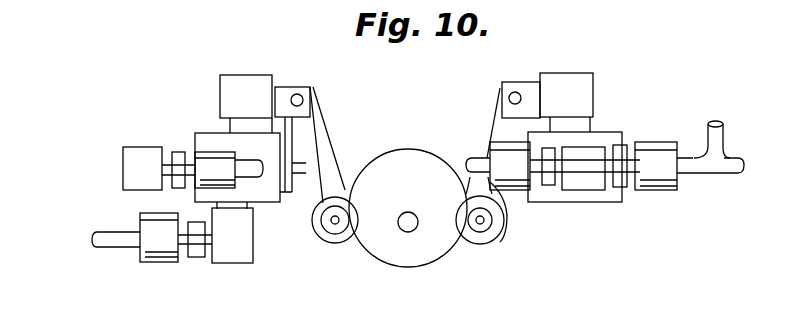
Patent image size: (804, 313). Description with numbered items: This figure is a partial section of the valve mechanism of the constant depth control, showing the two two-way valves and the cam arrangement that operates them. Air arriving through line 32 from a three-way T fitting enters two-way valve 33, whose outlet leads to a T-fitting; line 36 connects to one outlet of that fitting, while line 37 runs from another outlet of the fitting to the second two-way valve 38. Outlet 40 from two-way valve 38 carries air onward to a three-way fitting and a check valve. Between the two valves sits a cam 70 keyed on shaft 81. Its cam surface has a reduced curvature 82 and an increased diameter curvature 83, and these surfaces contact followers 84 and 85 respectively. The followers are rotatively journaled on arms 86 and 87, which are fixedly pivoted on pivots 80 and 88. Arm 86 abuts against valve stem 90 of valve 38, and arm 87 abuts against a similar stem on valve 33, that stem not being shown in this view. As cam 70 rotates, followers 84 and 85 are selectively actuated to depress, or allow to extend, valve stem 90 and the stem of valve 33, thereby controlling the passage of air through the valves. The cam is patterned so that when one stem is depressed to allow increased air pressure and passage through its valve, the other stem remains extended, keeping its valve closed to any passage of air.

The line 32 is at (743, 168).
The two-way valve 33 is at (601, 138).
The line 36 is at (722, 132).
The line 37 is at (247, 165).
The two-way valve 38 is at (200, 139).
The outlet 40 is at (110, 240).
The cam 70 is at (424, 158).
The pivot 80 is at (517, 92).
The shaft 81 is at (413, 229).
The reduced curvature cam surface 82 is at (395, 266).
The increased diameter curvature cam surface 83 is at (366, 160).
The follower 84 is at (326, 241).
The follower 85 is at (492, 241).
The arm 86 is at (321, 180).
The arm 87 is at (498, 198).
The pivot 88 is at (300, 96).
The valve stem 90 is at (299, 168).